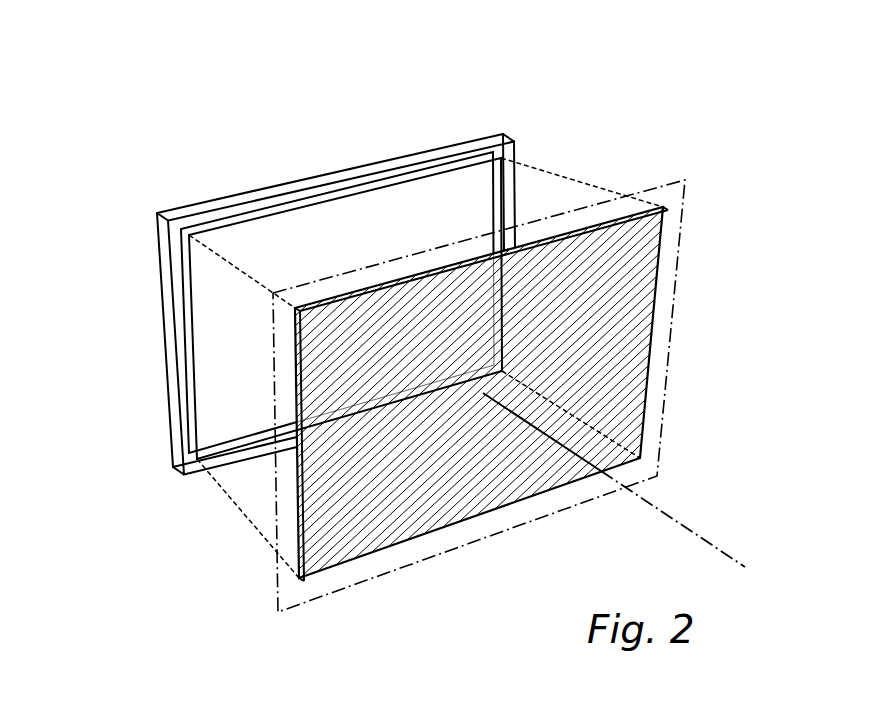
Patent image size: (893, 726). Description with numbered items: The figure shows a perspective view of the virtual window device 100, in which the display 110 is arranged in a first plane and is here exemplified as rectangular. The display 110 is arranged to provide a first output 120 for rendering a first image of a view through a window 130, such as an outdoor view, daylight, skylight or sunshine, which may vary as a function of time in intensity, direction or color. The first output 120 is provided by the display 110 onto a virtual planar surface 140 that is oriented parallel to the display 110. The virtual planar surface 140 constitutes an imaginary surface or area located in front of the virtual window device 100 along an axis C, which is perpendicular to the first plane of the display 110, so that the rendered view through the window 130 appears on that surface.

The virtual window device 100 is at (538, 81).
The display 110 is at (353, 223).
The first output 120 is at (557, 182).
The window 130 is at (633, 377).
The virtual planar surface 140 is at (665, 182).
The axis C is at (694, 531).